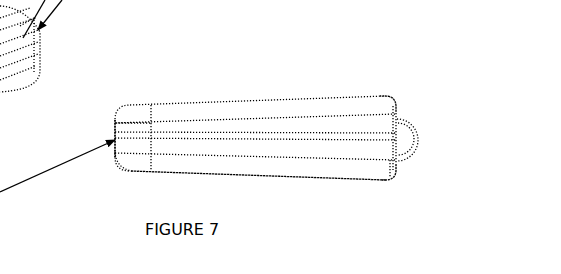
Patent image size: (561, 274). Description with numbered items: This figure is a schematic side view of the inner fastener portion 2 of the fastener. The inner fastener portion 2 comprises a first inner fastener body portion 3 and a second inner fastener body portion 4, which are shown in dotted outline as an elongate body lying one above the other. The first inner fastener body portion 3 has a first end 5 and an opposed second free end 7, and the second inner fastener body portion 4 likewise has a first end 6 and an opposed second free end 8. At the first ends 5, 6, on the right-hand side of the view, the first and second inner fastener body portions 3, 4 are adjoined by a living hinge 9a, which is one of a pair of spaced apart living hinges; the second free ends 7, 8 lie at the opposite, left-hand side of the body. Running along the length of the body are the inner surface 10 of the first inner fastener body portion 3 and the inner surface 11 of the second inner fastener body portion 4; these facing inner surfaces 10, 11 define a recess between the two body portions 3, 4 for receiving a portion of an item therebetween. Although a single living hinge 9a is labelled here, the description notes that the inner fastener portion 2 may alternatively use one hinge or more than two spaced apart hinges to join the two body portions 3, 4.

The inner fastener portion 2 is at (255, 83).
The first inner fastener body portion 3 is at (168, 113).
The second inner fastener body portion 4 is at (178, 160).
The first end 5 is at (392, 102).
The first end 6 is at (397, 167).
The second free end 7 is at (115, 126).
The second free end 8 is at (115, 160).
The living hinge 9a is at (415, 133).
The inner surface 10 is at (213, 132).
The inner surface 11 is at (187, 142).